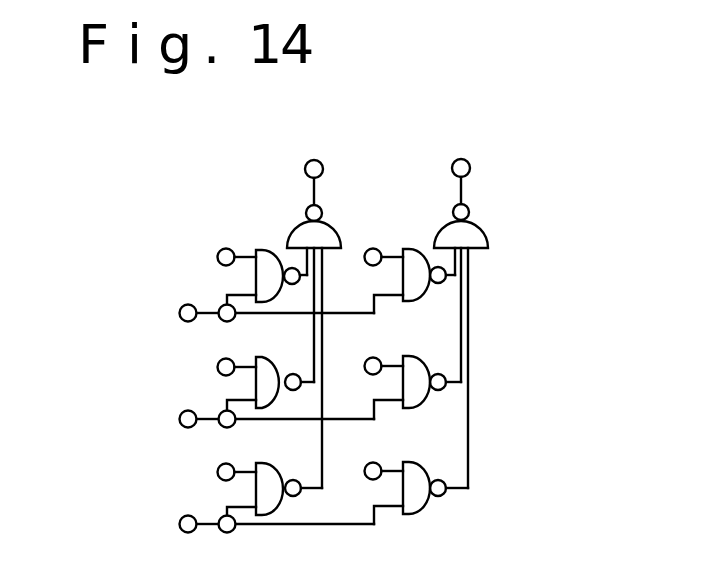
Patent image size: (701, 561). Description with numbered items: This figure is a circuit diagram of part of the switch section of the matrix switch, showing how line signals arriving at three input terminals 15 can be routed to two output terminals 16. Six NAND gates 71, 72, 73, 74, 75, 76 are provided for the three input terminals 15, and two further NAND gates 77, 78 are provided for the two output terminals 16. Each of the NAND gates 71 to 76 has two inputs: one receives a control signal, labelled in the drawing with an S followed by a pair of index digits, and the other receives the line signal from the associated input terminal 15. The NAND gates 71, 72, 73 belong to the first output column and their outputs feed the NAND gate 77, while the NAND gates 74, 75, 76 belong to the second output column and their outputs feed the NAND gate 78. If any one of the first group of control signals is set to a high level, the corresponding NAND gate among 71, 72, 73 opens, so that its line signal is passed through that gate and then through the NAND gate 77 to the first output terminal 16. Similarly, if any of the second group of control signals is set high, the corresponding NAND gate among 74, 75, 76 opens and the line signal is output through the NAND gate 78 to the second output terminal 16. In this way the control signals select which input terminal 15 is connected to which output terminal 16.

The input terminal 15 is at (180, 313).
The output terminal 16 is at (314, 160).
The NAND gate 71 is at (278, 247).
The NAND gate 72 is at (264, 356).
The NAND gate 73 is at (266, 463).
The NAND gate 74 is at (420, 246).
The NAND gate 75 is at (416, 355).
The NAND gate 76 is at (418, 462).
The NAND gate 77 is at (322, 216).
The NAND gate 78 is at (470, 214).